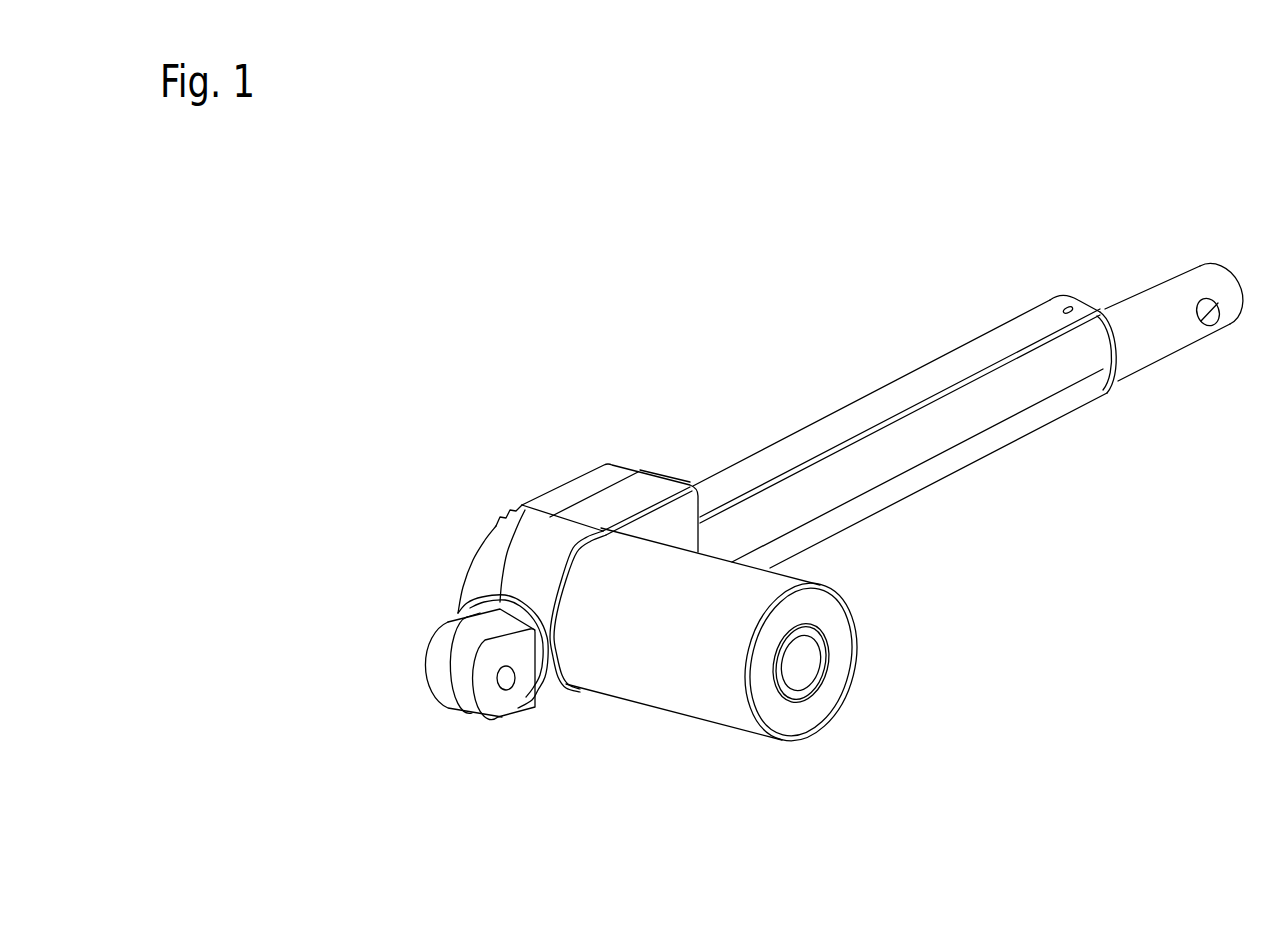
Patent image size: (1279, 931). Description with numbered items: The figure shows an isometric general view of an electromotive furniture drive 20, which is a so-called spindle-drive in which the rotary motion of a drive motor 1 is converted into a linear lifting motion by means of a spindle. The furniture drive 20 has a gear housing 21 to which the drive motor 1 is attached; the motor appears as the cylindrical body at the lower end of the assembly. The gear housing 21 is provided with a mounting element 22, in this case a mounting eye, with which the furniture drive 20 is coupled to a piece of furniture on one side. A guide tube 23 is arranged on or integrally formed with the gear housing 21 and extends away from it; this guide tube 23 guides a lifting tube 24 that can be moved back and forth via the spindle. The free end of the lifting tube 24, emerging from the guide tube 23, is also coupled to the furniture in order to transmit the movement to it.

The drive motor 1 is at (683, 732).
The furniture drive 20 is at (782, 410).
The gear housing 21 is at (527, 518).
The mounting element 22 is at (468, 687).
The guide tube 23 is at (900, 488).
The lifting tube 24 is at (1142, 310).